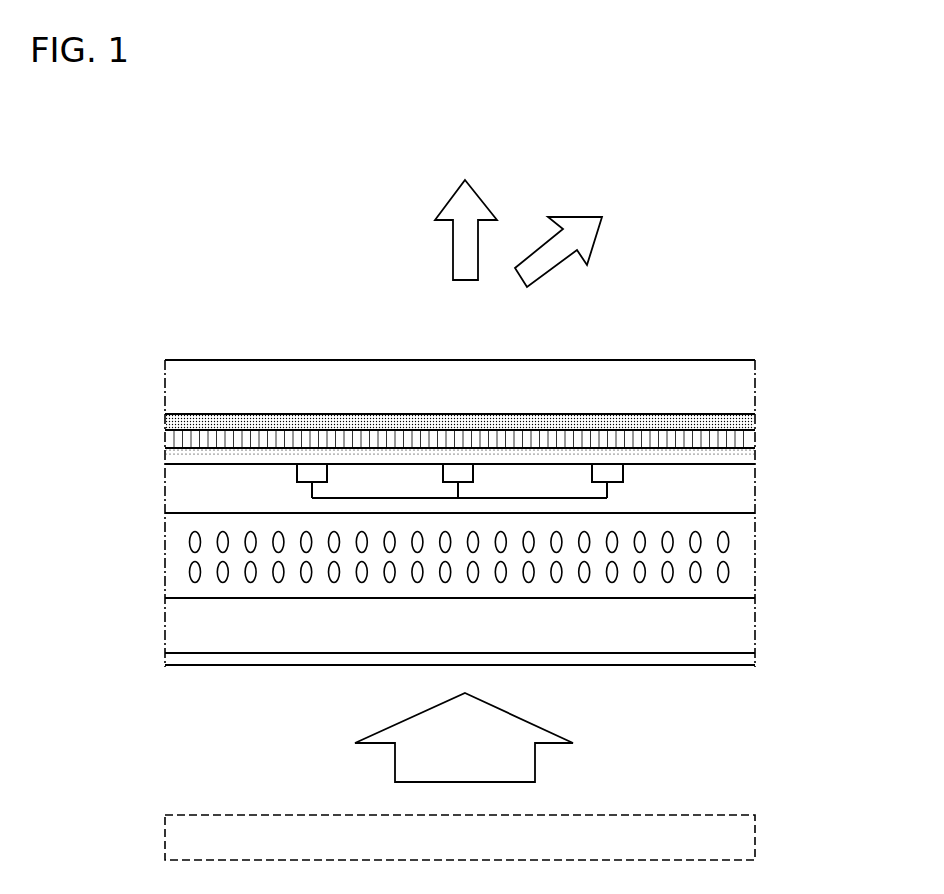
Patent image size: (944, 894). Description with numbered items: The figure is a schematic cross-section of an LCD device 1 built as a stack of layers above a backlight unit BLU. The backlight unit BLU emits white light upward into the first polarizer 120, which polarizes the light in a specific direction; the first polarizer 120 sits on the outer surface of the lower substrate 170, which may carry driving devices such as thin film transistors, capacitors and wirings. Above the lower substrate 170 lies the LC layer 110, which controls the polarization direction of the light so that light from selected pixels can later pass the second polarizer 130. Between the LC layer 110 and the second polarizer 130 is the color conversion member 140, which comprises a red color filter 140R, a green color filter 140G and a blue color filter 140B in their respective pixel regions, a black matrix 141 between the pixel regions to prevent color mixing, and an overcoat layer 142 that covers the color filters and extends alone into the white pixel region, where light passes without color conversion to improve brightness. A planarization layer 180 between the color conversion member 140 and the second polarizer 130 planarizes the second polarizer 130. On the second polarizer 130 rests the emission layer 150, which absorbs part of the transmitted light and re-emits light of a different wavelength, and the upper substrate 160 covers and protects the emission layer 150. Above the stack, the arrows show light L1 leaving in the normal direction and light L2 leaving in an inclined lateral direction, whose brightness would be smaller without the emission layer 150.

The LCD device 1 is at (803, 268).
The LC layer 110 is at (745, 553).
The first polarizer 120 is at (745, 663).
The second polarizer 130 is at (748, 436).
The color conversion member 140 is at (765, 467).
The red color filter 140R is at (225, 478).
The green color filter 140G is at (385, 478).
The blue color filter 140B is at (538, 478).
The black matrix 141 is at (312, 472).
The overcoat layer 142 is at (172, 505).
The emission layer 150 is at (745, 418).
The upper substrate 160 is at (748, 371).
The lower substrate 170 is at (745, 620).
The planarization layer 180 is at (748, 457).
The light emitted in the normal direction L1 is at (470, 207).
The light emitted in a lateral direction L2 is at (578, 228).
The backlight unit BLU is at (745, 833).